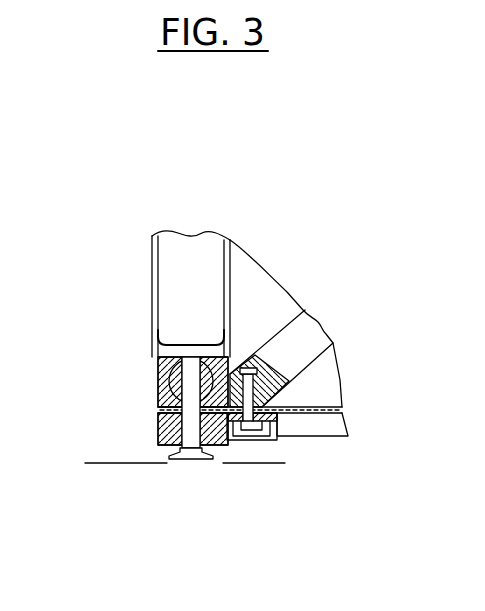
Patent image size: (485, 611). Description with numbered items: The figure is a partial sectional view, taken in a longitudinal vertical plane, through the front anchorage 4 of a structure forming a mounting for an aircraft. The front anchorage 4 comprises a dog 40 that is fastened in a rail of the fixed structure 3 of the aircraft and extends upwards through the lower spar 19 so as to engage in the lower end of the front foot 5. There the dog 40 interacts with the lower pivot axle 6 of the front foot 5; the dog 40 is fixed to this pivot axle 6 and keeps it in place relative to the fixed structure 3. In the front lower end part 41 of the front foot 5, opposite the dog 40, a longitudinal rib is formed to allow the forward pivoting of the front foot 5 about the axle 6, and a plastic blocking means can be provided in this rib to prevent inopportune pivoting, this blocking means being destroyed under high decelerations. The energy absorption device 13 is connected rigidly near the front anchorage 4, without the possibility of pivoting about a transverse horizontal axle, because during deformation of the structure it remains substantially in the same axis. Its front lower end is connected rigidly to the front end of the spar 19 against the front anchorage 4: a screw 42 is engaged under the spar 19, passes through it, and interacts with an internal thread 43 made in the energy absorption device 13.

The fixed structure 3 is at (130, 463).
The front anchorage 4 is at (108, 490).
The front foot 5 is at (151, 242).
The lower pivot axle 6 is at (158, 381).
The energy absorption device 13 is at (323, 332).
The lower spar 19 is at (334, 426).
The dog 40 is at (193, 434).
The front lower end part 41 is at (158, 430).
The screw 42 is at (260, 431).
The internal thread 43 is at (250, 366).